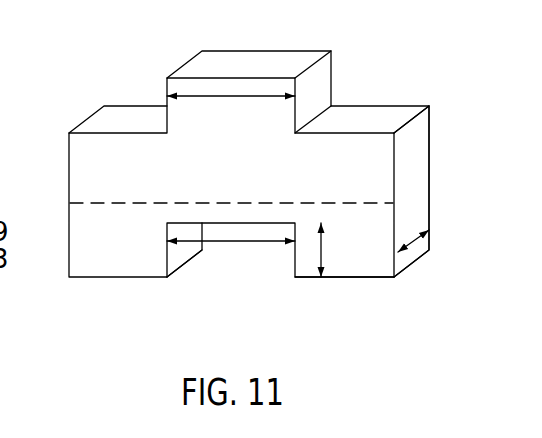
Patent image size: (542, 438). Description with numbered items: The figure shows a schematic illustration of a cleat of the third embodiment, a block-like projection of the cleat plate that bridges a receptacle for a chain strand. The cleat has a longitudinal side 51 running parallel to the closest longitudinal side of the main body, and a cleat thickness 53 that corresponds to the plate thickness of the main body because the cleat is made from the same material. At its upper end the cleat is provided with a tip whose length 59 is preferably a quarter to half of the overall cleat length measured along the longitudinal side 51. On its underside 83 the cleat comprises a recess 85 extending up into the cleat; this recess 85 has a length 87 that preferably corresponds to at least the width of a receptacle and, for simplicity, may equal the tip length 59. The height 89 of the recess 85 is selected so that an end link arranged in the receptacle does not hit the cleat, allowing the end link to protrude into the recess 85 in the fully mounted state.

The longitudinal side 51 is at (102, 203).
The cleat thickness 53 is at (414, 242).
The length of the tip 59 is at (233, 98).
The underside 83 is at (347, 279).
The recess 85 is at (211, 260).
The length of the recess 87 is at (233, 243).
The height of the recess 89 is at (323, 245).